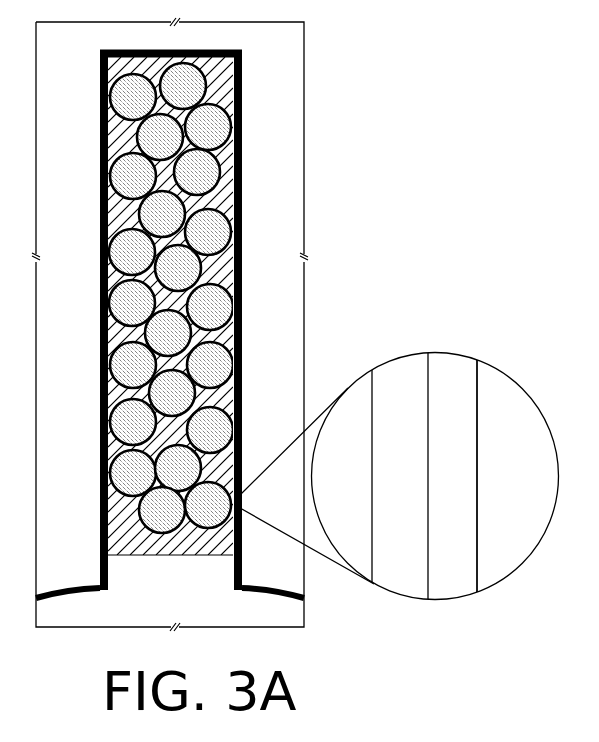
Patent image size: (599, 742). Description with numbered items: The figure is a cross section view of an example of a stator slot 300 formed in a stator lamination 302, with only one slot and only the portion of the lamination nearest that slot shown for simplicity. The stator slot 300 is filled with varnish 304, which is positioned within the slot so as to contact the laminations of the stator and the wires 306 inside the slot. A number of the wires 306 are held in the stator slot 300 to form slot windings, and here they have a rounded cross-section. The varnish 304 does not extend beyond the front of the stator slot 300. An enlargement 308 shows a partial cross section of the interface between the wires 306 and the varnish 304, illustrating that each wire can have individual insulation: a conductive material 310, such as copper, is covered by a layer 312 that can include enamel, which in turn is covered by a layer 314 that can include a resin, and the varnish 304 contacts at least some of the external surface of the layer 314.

The stator slot 300 is at (108, 583).
The stator lamination 302 is at (88, 367).
The varnish 304 is at (167, 555).
The wires 306 is at (218, 279).
The enlargement 308 is at (408, 600).
The material 310 is at (360, 484).
The layer 312 is at (417, 484).
The layer 314 is at (469, 484).